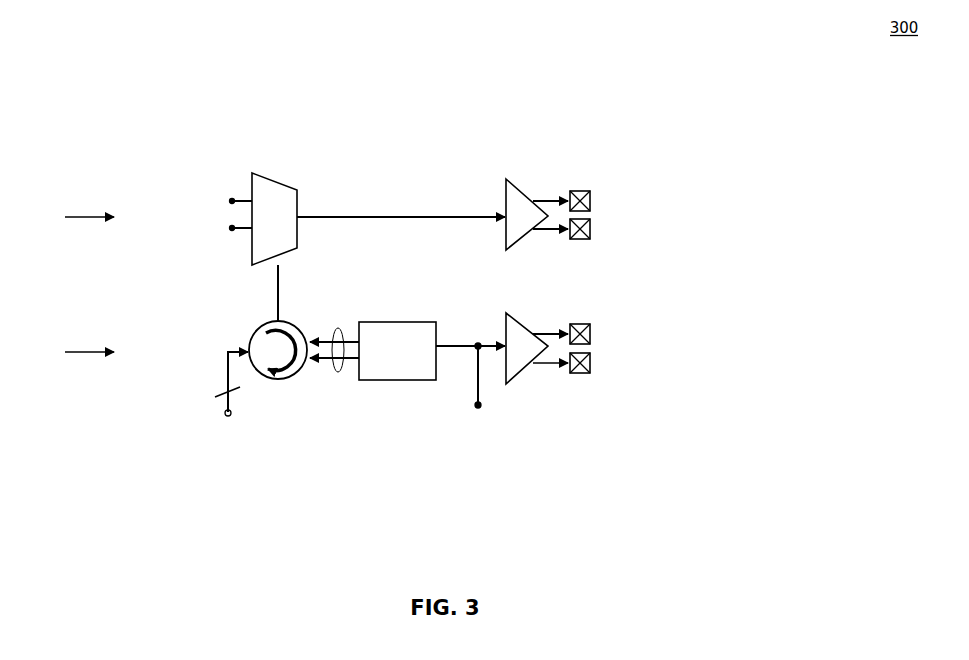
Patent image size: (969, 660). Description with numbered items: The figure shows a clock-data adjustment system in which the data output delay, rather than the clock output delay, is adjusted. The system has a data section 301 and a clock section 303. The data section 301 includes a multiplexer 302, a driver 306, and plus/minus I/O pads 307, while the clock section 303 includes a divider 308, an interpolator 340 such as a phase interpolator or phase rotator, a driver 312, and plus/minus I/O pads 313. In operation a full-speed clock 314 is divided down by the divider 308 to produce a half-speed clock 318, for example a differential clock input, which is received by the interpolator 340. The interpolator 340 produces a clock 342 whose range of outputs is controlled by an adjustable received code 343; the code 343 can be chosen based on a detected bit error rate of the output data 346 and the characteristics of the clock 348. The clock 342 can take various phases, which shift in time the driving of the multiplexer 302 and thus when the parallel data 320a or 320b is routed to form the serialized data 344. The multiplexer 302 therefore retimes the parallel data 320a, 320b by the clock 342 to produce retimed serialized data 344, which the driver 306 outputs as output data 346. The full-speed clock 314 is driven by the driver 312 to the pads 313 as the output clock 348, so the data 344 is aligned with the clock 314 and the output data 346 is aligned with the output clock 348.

The data section 301 is at (72, 217).
The multiplexer 302 is at (280, 186).
The clock section 303 is at (72, 352).
The driver 306 is at (519, 183).
The +/− I/O pads 307 is at (594, 226).
The divider 308 is at (396, 322).
The driver 312 is at (527, 321).
The +/− I/O pads 313 is at (592, 345).
The full-speed clock 314 is at (480, 384).
The half-speed clock 318 is at (340, 372).
The parallel data 320a is at (231, 198).
The parallel data 320b is at (231, 232).
The interpolator 340 is at (278, 380).
The clock 342 is at (282, 287).
The code 343 is at (226, 360).
The serial data 344 is at (425, 214).
The output data 346 is at (564, 228).
The output clock 348 is at (553, 336).